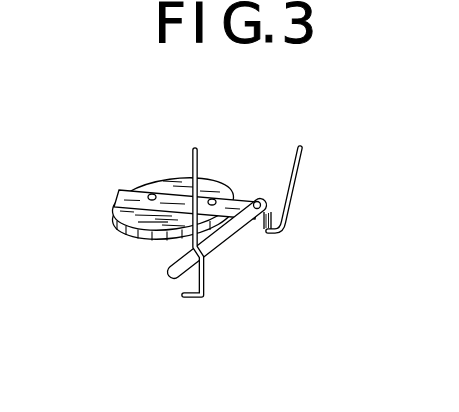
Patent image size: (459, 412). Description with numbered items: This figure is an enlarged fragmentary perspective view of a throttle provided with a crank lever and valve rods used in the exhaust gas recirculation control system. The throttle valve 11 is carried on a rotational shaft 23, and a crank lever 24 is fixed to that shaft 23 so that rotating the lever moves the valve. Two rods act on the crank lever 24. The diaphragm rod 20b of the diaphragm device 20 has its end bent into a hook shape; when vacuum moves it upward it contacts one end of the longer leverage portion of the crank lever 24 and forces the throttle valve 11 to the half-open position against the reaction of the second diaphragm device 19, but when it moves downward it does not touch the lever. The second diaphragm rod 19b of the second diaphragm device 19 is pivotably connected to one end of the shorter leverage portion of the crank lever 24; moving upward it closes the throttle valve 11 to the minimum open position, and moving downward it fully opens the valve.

The throttle valve 11 is at (123, 214).
The second diaphragm device 19 is at (302, 143).
The second diaphragm rod 19b is at (293, 186).
The diaphragm device 20 is at (194, 145).
The diaphragm rod 20b is at (200, 168).
The rotational shaft 23 is at (172, 199).
The crank lever 24 is at (224, 244).